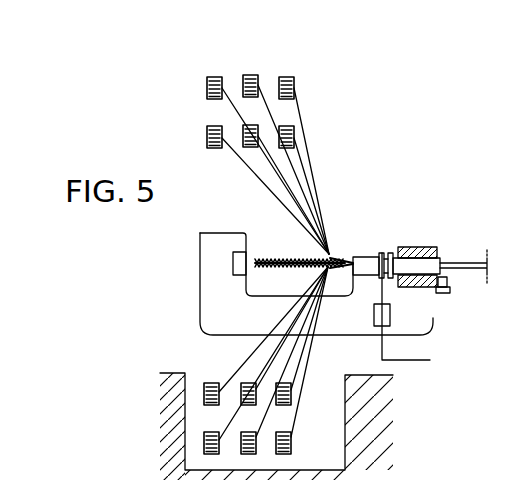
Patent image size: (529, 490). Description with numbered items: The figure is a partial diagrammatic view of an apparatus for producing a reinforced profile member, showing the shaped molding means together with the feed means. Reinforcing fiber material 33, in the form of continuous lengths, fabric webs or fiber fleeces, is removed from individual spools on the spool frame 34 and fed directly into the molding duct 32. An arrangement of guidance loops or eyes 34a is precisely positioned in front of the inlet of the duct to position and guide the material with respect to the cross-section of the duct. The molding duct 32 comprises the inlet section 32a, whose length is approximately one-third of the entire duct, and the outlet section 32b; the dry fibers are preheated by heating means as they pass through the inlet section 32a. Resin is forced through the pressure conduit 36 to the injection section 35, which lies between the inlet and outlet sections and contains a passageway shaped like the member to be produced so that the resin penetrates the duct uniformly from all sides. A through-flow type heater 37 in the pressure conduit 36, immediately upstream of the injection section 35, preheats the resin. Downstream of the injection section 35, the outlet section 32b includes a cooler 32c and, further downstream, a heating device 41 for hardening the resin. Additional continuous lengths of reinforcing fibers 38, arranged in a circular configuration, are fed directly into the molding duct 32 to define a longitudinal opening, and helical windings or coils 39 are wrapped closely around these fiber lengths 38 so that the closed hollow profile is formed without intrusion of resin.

The molding duct 32 is at (418, 290).
The inlet section 32a is at (365, 257).
The outlet section 32b is at (441, 265).
The cooler 32c is at (391, 252).
The reinforcing fiber material 33 is at (297, 168).
The spool frame 34 is at (249, 71).
The guidance loops or eyes 34a is at (330, 269).
The injection section 35 is at (382, 253).
The pressure conduit 36 is at (393, 360).
The through-flow type heater 37 is at (374, 315).
The continuous lengths of reinforcing fibers 38 is at (268, 270).
The helical windings or coils 39 is at (291, 255).
The heating device 41 is at (428, 248).